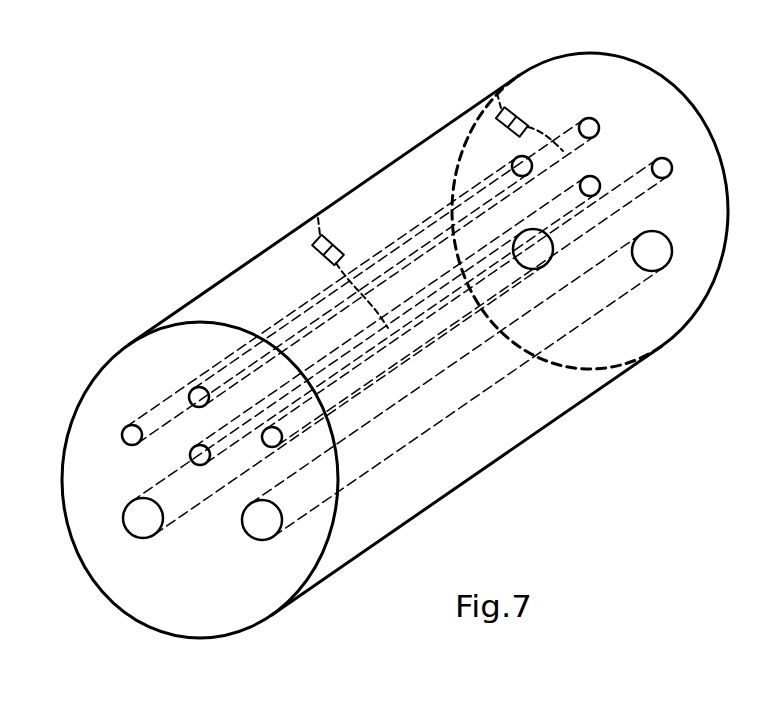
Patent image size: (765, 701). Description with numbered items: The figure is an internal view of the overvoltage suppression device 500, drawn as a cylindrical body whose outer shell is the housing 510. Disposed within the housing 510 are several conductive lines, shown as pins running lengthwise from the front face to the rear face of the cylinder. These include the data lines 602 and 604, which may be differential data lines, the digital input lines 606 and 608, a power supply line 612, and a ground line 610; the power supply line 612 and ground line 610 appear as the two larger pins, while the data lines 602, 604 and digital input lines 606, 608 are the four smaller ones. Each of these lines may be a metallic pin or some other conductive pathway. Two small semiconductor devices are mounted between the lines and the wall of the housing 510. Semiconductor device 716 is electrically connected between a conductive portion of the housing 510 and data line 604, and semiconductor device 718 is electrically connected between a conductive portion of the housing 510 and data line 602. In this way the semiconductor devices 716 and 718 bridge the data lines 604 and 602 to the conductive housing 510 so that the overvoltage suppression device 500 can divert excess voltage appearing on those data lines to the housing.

The overvoltage suppression device 500 is at (322, 88).
The housing 510 is at (482, 425).
The data line 602 is at (195, 393).
The data line 604 is at (196, 455).
The digital input line 606 is at (122, 438).
The digital input line 608 is at (268, 440).
The ground line 610 is at (138, 520).
The power supply line 612 is at (262, 520).
The semiconductor device 716 is at (337, 238).
The semiconductor device 718 is at (527, 112).